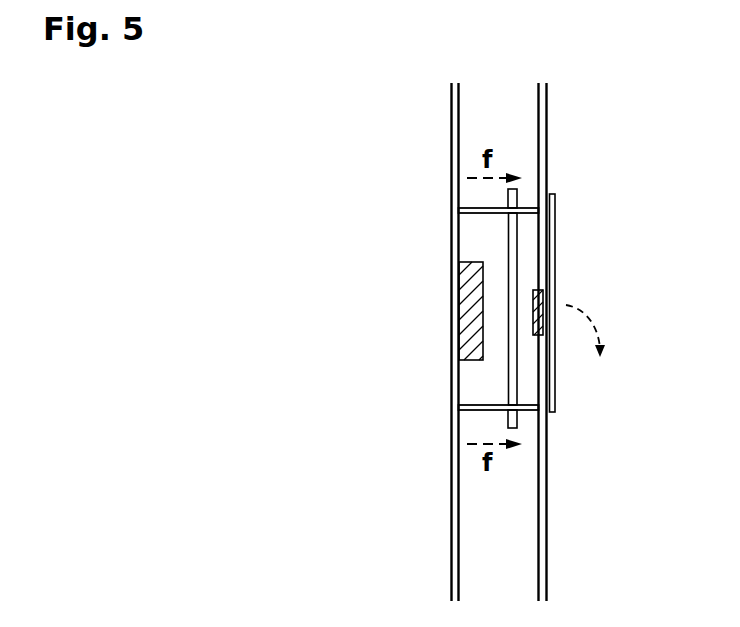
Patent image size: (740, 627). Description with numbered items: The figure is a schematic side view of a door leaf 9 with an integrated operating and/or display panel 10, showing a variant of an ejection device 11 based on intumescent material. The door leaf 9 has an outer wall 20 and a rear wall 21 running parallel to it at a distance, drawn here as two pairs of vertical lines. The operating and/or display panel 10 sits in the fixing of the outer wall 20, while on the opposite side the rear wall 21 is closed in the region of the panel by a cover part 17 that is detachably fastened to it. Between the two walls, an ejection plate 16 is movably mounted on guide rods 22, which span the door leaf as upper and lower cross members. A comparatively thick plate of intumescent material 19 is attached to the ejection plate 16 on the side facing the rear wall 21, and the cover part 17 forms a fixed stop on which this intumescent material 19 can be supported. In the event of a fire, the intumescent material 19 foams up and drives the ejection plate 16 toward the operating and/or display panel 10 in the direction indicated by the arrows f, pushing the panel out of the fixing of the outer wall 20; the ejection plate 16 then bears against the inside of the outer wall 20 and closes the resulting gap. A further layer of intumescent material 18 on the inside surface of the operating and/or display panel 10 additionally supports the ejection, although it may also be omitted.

The door leaf 9 is at (355, 139).
The operating and/or display panel 10 is at (568, 206).
The ejection device 11 is at (463, 253).
The ejection plate 16 is at (518, 258).
The cover part 17 is at (467, 358).
The intumescent material 18 is at (544, 295).
The intumescent material 19 is at (473, 313).
The outer wall 20 is at (547, 553).
The rear wall 21 is at (451, 553).
The guide rods 22 is at (473, 208).